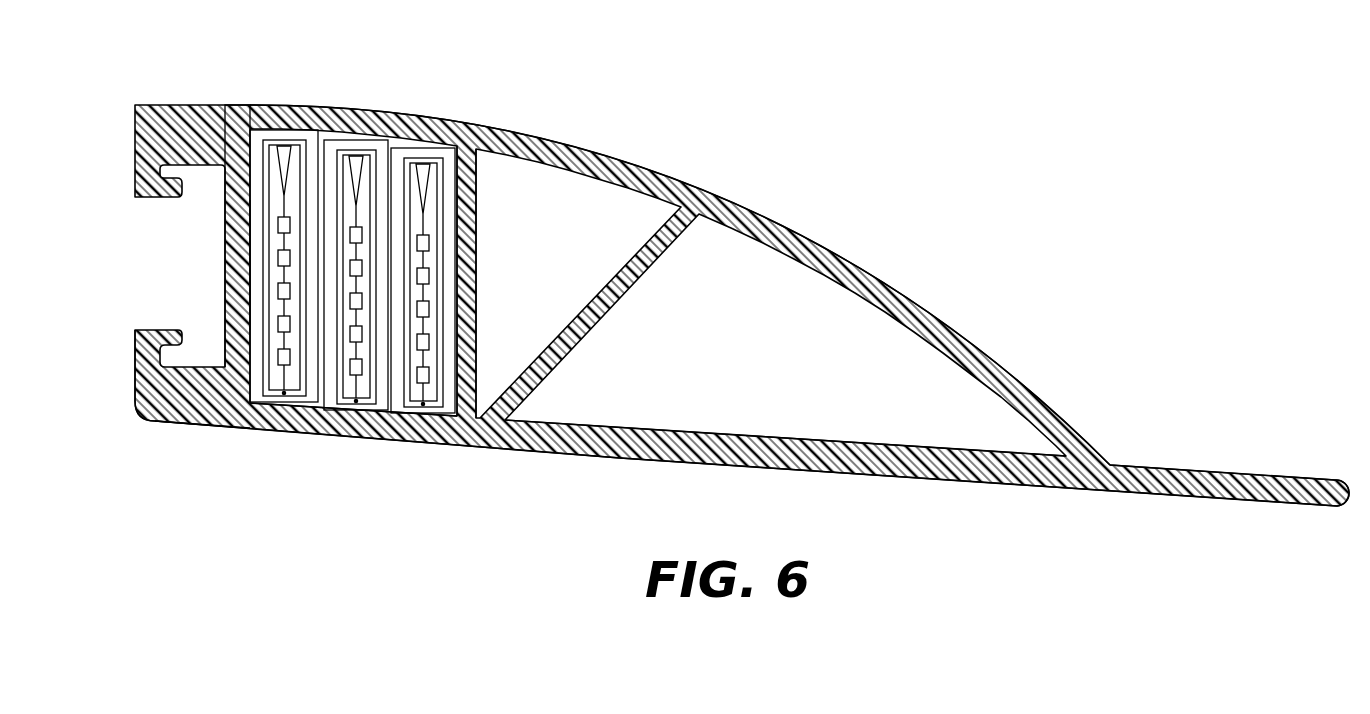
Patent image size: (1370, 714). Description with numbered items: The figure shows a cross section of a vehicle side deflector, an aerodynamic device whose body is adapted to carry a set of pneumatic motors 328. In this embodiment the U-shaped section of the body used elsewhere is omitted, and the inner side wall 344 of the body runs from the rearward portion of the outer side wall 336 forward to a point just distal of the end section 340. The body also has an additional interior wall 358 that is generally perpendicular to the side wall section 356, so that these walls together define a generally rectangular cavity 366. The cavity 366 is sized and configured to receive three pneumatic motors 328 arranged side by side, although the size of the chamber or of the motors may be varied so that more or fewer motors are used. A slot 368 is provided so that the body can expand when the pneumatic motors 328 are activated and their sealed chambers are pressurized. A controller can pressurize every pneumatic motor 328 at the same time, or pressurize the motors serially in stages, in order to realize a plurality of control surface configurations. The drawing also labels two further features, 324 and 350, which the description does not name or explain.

The slot 368 is at (243, 118).
The pneumatic motor 328 is at (300, 136).
The interior wall 358 is at (478, 226).
The end section 340 is at (222, 238).
The vertical web of core member 350 is at (227, 268).
The inner side wall 344 is at (923, 310).
The rectangular cavity 366 is at (242, 388).
The side wall section 356 is at (320, 428).
The lower skin 324 is at (524, 447).
The outer side wall 336 is at (957, 475).